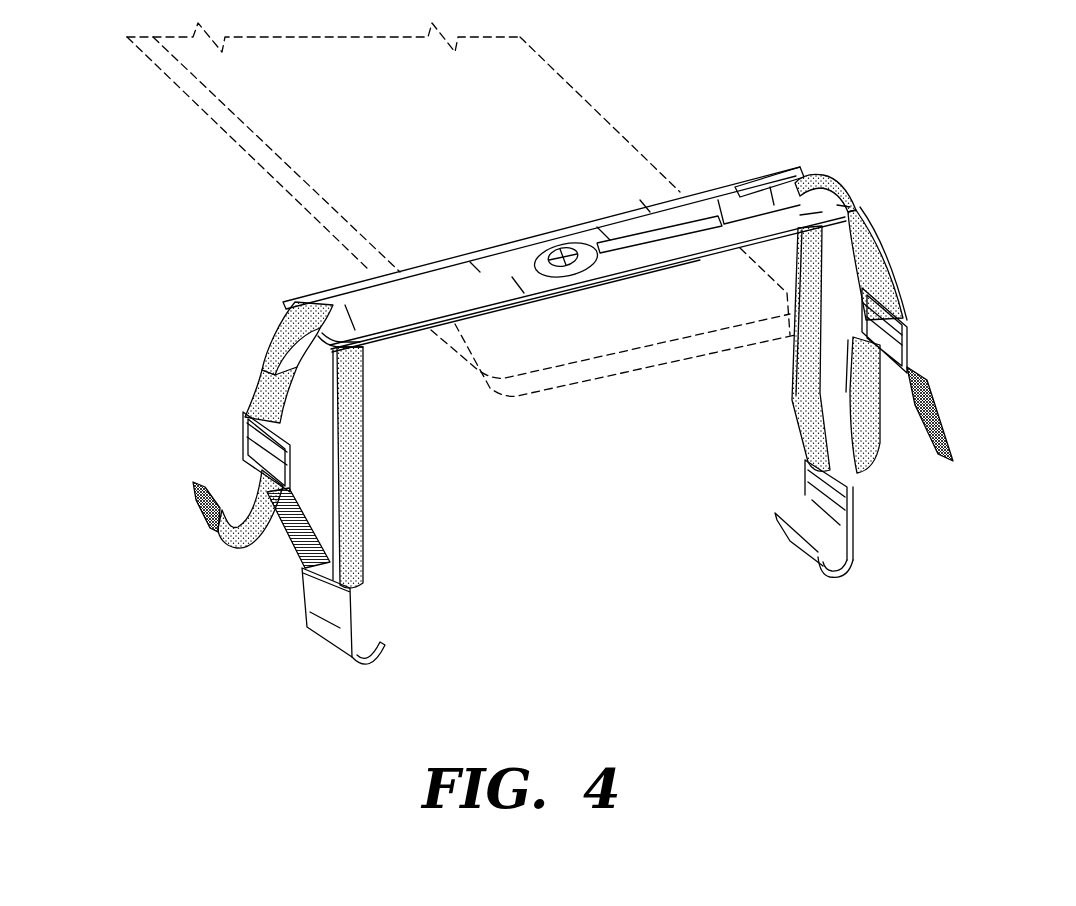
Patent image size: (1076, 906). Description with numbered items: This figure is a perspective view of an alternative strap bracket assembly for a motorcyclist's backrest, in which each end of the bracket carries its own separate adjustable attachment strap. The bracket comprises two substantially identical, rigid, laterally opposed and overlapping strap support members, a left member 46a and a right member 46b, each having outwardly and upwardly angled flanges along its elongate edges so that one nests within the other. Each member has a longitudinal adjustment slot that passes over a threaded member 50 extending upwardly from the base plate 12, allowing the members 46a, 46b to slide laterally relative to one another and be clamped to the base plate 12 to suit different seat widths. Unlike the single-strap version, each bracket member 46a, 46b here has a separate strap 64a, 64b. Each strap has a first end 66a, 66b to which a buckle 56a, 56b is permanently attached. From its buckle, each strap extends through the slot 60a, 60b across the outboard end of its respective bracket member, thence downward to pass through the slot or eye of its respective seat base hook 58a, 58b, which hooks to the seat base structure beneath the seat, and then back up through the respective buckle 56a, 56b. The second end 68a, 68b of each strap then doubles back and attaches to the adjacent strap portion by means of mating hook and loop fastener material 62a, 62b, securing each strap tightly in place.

The base plate 12 is at (583, 397).
The left strap support member 46a is at (384, 344).
The right strap support member 46b is at (742, 187).
The threaded member 50 is at (560, 276).
The first buckle 56a is at (245, 430).
The second buckle 56b is at (907, 343).
The first seat base hook 58a is at (331, 644).
The second seat base hook 58b is at (783, 547).
The slot of first strap bracket member 60a is at (313, 302).
The slot of second strap bracket member 60b is at (783, 183).
The hook and loop fastener material 62a is at (272, 587).
The mating hook and loop fastener material 62b is at (203, 522).
The first strap 64a is at (368, 503).
The second strap 64b is at (785, 398).
The first end of first strap 66a is at (268, 362).
The first end of second strap 66b is at (897, 287).
The second end of first strap 68a is at (197, 482).
The second end of second strap 68b is at (948, 418).